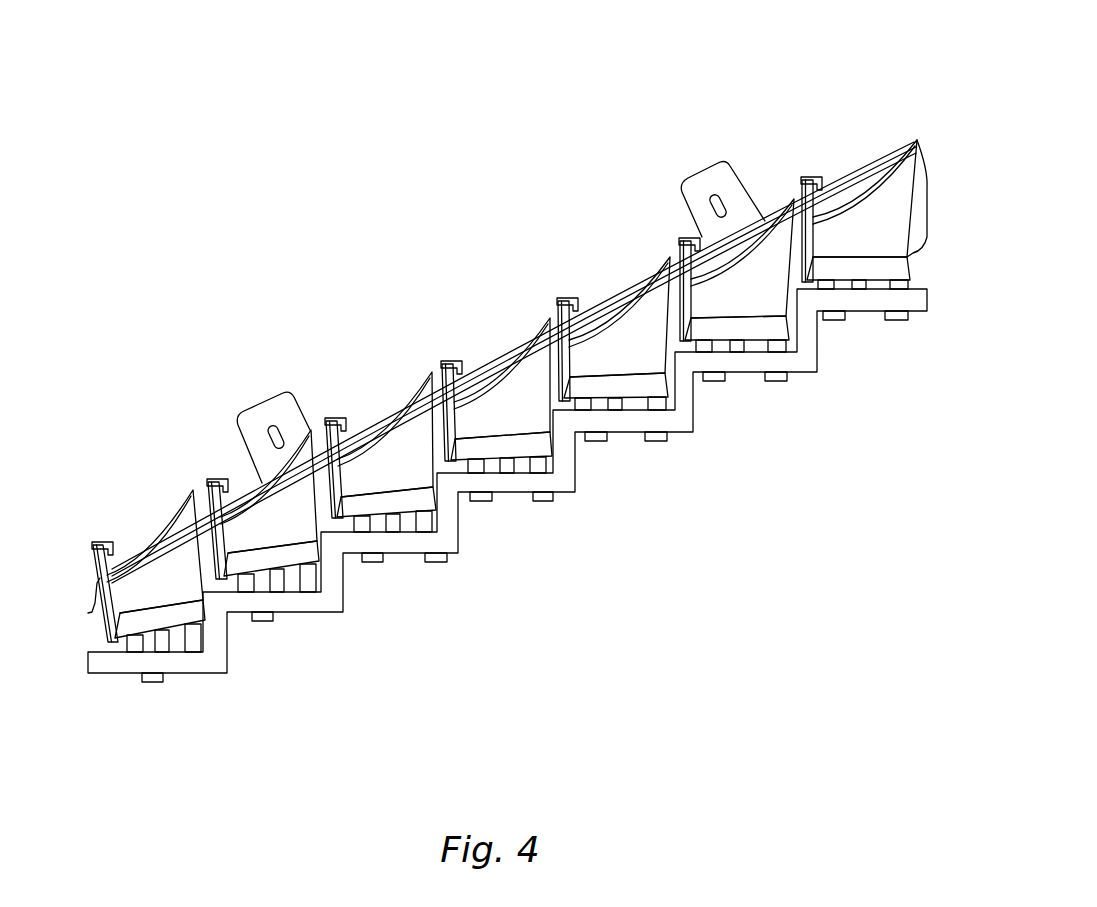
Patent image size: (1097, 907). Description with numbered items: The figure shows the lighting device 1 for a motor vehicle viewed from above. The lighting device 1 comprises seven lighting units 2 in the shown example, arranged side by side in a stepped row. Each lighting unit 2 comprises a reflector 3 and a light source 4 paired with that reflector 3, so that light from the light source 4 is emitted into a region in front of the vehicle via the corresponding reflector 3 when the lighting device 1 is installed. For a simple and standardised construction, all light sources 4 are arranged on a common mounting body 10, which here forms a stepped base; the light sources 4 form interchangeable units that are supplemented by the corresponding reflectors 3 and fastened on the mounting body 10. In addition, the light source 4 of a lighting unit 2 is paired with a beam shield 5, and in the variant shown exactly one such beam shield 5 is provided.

The lighting device 1 is at (507, 365).
The lighting unit 2 is at (168, 447).
The reflector 3 is at (176, 553).
The light source 4 is at (108, 540).
The beam shield 5 is at (116, 570).
The mounting body 10 is at (285, 600).